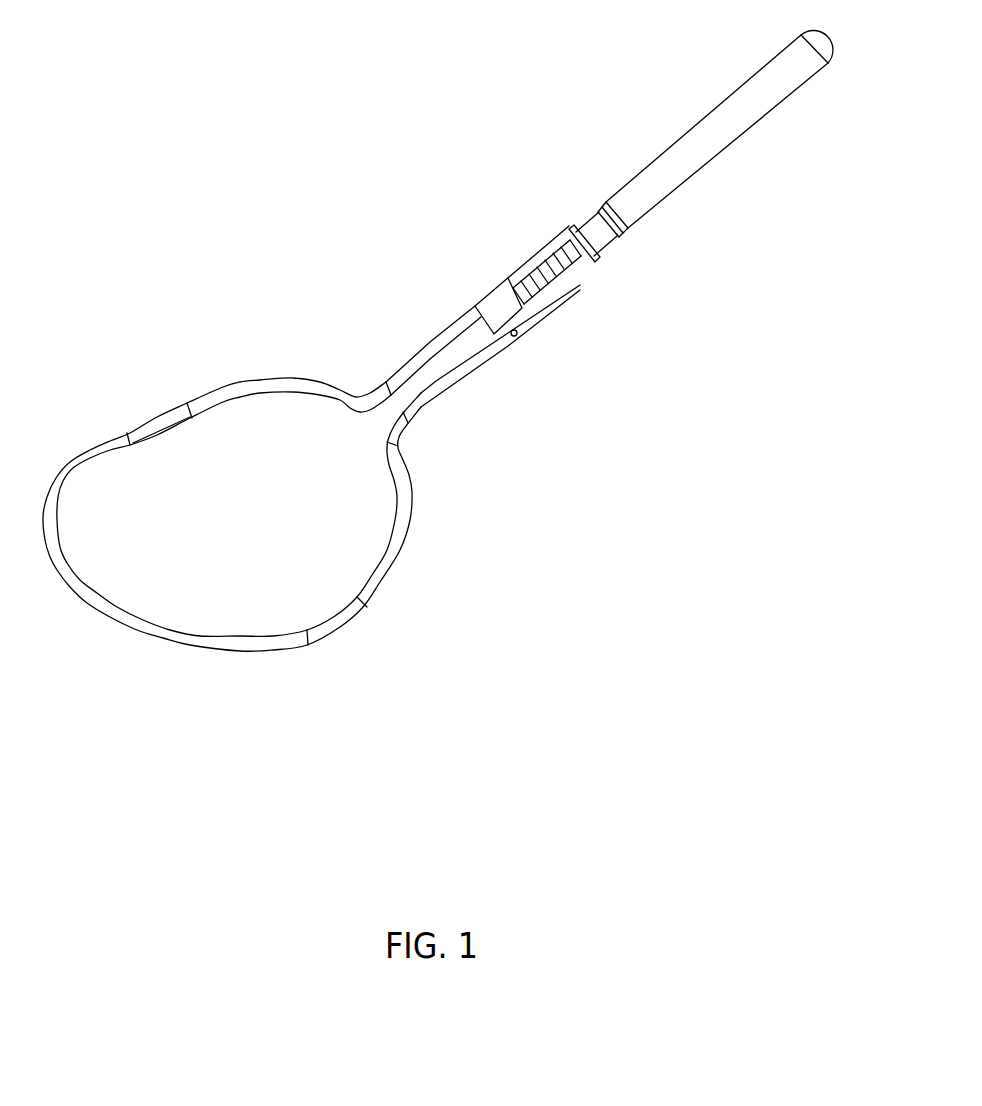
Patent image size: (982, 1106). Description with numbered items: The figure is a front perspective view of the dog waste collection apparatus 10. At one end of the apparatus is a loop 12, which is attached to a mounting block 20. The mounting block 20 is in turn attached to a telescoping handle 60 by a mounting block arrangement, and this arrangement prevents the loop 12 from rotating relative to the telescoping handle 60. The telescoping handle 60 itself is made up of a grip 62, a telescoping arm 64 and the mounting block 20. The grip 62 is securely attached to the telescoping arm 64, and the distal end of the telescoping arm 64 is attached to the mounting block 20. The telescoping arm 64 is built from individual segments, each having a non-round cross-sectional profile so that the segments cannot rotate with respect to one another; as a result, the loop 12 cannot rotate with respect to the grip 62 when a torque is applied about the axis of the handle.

The dog waste collection apparatus 10 is at (438, 340).
The loop 12 is at (408, 535).
The mounting block 20 is at (507, 280).
The telescoping handle 60 is at (632, 233).
The grip 62 is at (652, 158).
The telescoping arm 64 is at (558, 278).